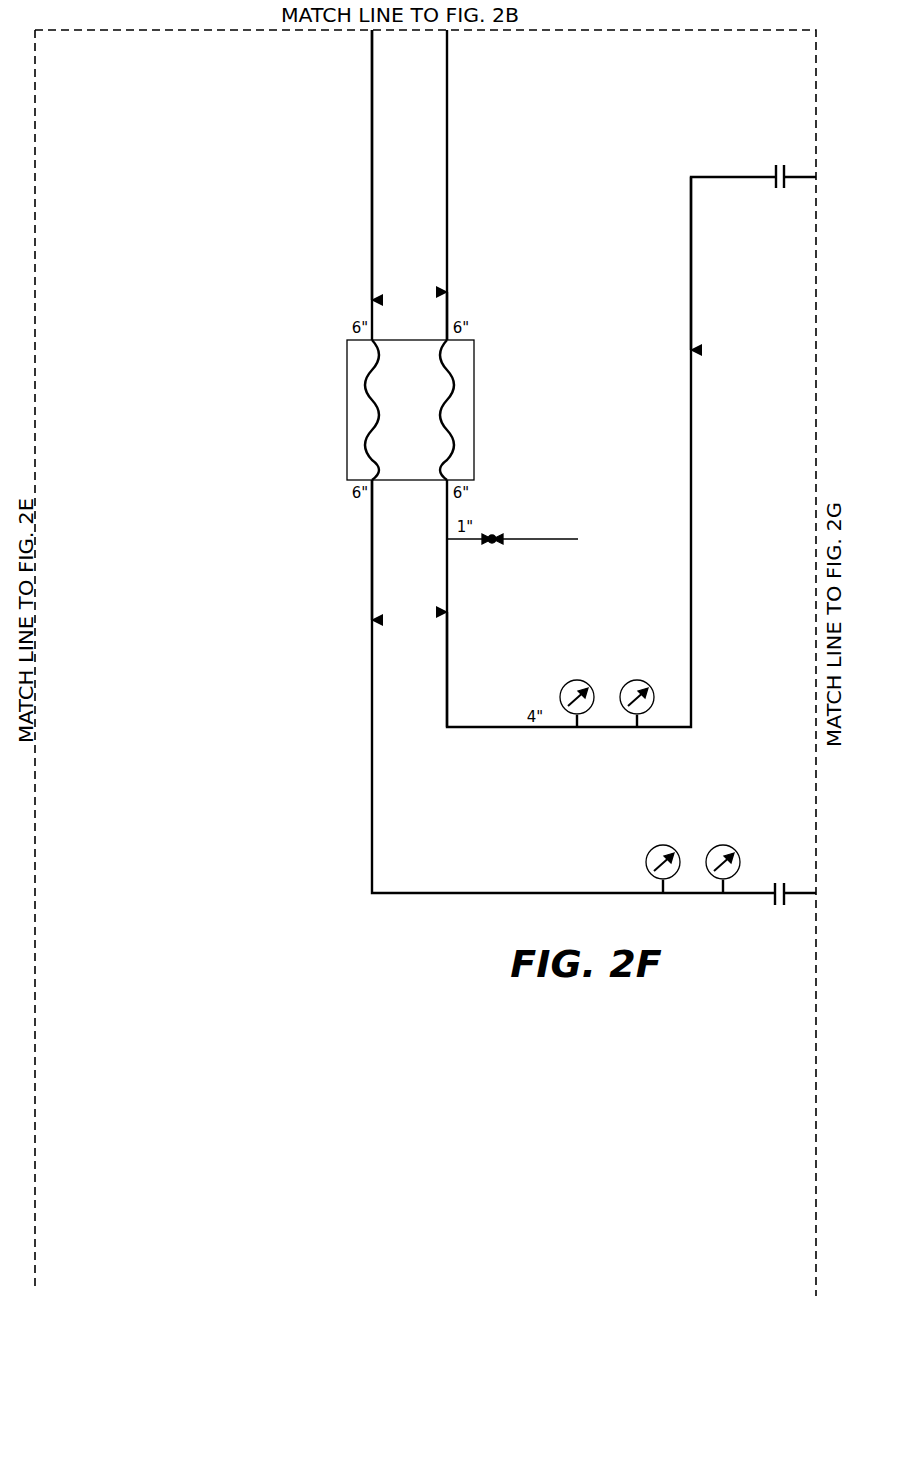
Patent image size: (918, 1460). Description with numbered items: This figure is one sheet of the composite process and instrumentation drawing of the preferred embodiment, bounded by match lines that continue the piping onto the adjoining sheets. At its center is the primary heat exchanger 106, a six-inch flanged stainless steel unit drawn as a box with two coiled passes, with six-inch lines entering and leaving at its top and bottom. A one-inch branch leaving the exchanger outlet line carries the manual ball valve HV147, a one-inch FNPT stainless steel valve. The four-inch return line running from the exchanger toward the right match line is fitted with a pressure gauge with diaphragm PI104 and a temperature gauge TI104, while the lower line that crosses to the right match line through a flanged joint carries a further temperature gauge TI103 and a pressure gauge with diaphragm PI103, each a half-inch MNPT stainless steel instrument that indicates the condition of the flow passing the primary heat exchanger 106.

The primary heat exchanger 106 is at (410, 410).
The manual ball valve HV147 is at (512, 567).
The pressure gauge with diaphragm PI104 is at (578, 669).
The temperature gauge TI104 is at (637, 669).
The temperature gauge TI103 is at (663, 834).
The pressure gauge with diaphragm PI103 is at (723, 834).